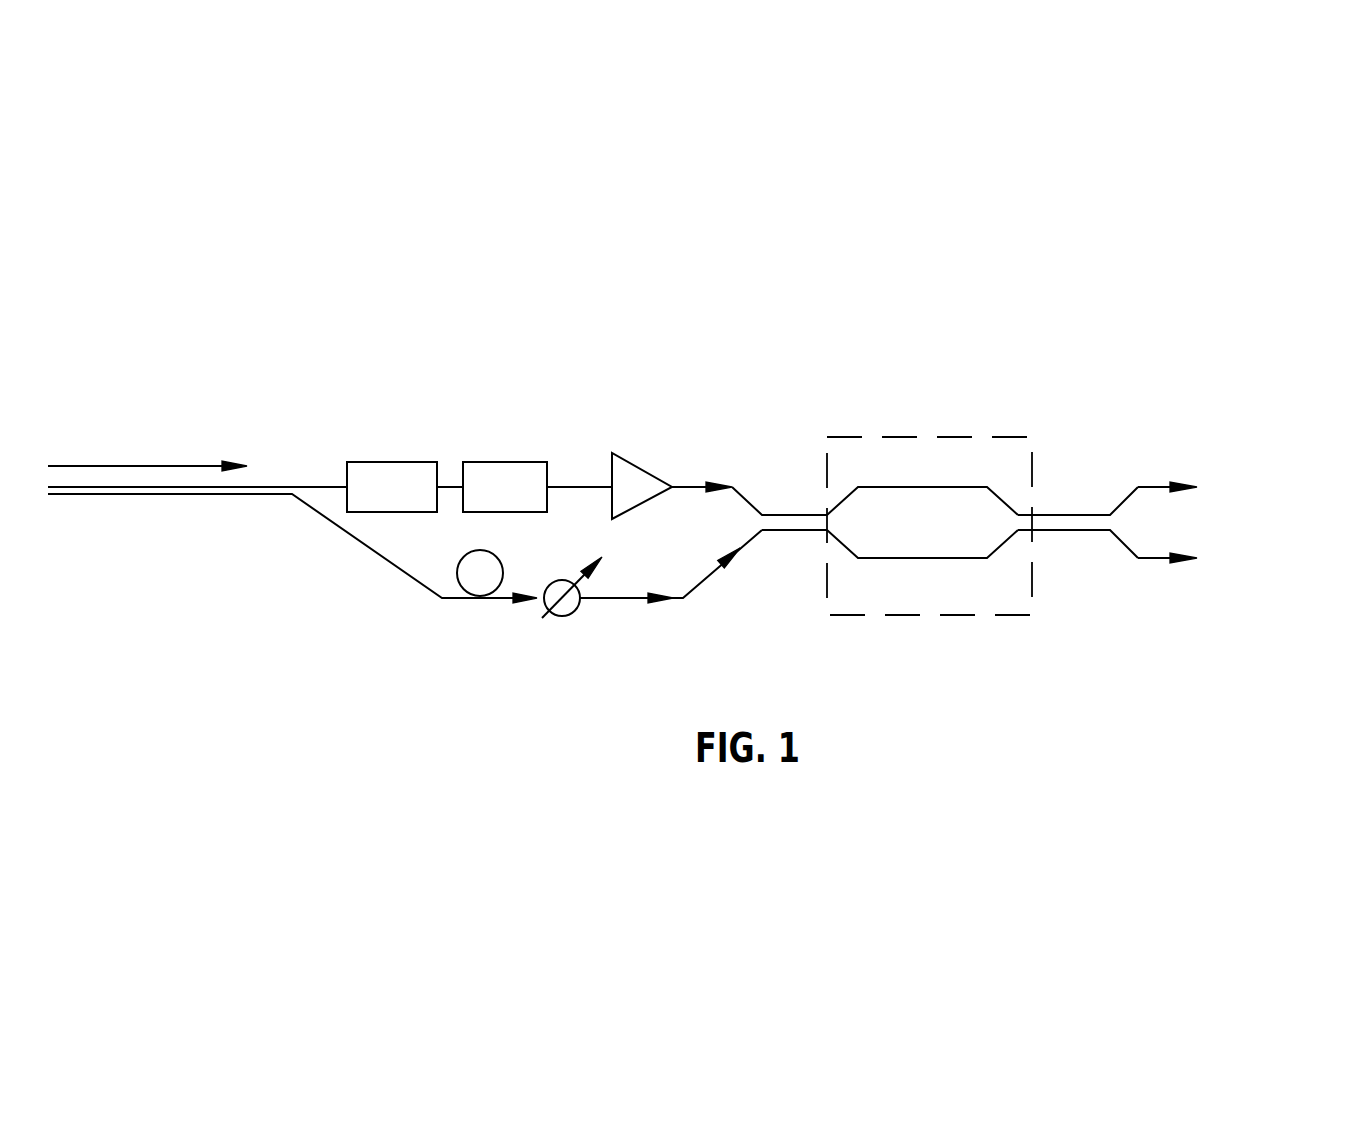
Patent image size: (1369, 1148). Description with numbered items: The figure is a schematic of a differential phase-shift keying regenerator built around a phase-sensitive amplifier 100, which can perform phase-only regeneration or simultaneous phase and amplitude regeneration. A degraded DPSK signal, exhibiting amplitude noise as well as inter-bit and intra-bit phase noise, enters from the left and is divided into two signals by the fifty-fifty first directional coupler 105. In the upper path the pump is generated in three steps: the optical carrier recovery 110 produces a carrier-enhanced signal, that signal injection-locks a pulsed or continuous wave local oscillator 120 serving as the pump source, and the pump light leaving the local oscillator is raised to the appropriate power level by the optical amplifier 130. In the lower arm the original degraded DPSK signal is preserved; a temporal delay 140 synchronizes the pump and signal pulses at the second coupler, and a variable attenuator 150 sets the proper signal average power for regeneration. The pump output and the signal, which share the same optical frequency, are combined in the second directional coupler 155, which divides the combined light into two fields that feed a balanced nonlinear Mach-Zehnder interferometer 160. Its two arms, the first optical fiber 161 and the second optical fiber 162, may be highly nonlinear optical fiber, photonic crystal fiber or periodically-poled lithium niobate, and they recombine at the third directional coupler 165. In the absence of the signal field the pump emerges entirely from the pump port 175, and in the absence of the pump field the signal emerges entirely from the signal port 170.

The phase-sensitive amplifier 100 is at (962, 325).
The first directional coupler 105 is at (212, 535).
The optical carrier recovery 110 is at (387, 460).
The local oscillator 120 is at (505, 460).
The optical amplifier 130 is at (643, 467).
The temporal delay 140 is at (455, 598).
The variable attenuator 150 is at (572, 613).
The second directional coupler 155 is at (790, 577).
The Mach-Zehnder interferometer 160 is at (1013, 435).
The optical fiber E1 161 is at (950, 485).
The optical fiber E2 162 is at (945, 560).
The third directional coupler 165 is at (1077, 568).
The signal port 170 is at (1250, 450).
The pump port 175 is at (1240, 597).